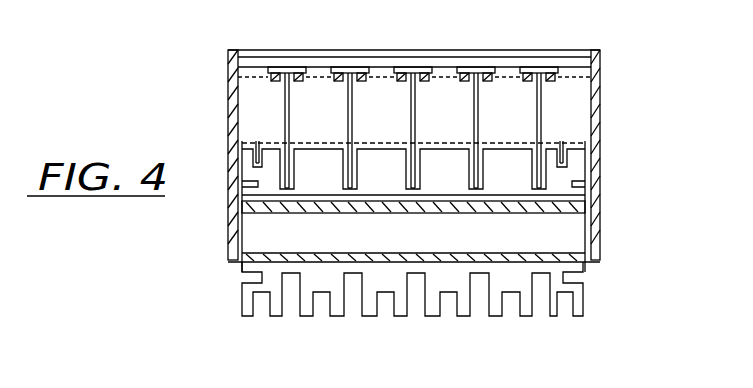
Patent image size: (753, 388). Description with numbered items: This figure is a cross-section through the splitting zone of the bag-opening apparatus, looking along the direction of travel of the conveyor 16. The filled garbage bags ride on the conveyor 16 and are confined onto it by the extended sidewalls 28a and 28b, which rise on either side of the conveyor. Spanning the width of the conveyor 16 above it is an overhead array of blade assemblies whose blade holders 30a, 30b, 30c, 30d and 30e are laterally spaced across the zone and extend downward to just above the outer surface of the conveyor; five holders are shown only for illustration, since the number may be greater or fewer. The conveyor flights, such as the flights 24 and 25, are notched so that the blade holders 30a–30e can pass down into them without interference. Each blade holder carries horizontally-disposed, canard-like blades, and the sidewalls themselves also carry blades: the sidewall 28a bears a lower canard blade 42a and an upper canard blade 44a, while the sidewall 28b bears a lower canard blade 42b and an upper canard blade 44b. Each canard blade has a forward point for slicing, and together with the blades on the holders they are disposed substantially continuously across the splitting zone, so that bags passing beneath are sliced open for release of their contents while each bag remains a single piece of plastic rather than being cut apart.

The conveyor 16 is at (560, 212).
The flight 24 is at (583, 292).
The flight 25 is at (521, 187).
The extended sidewall 28a is at (600, 72).
The extended sidewall 28b is at (229, 90).
The blade holder 30a is at (543, 101).
The blade holder 30b is at (479, 112).
The blade holder 30c is at (416, 112).
The blade holder 30d is at (353, 112).
The blade holder 30e is at (290, 112).
The lower canard blade 42a is at (584, 184).
The lower canard blade 42b is at (246, 185).
The upper canard blade 44a is at (565, 142).
The upper canard blade 44b is at (256, 142).